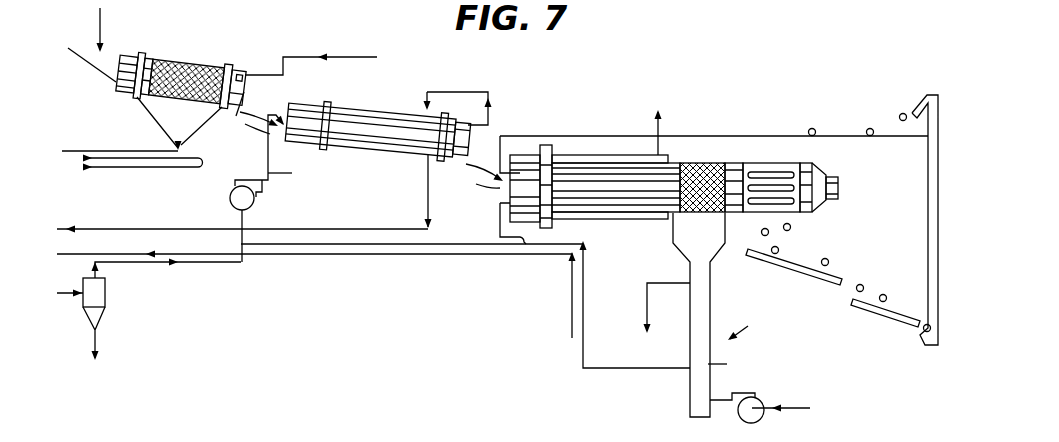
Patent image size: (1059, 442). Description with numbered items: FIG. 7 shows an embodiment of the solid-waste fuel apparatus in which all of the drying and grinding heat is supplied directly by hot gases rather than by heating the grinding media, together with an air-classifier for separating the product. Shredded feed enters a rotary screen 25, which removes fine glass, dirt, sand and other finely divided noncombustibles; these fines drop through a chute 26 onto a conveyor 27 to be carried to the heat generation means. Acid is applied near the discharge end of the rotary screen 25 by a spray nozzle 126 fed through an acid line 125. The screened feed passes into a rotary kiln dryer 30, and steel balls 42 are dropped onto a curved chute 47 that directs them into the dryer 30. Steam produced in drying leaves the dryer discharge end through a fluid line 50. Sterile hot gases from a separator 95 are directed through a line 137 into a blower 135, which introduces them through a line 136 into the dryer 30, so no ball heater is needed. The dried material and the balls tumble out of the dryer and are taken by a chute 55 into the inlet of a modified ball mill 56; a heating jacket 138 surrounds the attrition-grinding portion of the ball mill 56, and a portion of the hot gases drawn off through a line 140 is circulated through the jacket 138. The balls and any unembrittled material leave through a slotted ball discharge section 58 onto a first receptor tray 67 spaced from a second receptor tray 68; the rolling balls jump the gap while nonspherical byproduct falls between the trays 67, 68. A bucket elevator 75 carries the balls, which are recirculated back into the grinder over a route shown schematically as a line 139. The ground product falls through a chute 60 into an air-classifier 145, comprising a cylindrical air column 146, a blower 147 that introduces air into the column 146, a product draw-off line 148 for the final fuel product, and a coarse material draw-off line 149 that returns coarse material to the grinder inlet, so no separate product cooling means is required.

The rotary screen 25 is at (190, 62).
The spray nozzle 126 is at (240, 66).
The acid line 125 is at (350, 40).
The chute 26 is at (150, 117).
The conveyor 27 is at (120, 172).
The curved chute 47 is at (256, 130).
The rotary kiln dryer 30 is at (388, 106).
The fluid line 50 is at (478, 93).
The line 136 is at (297, 175).
The blower 135 is at (254, 196).
The line 137 is at (211, 262).
The line 140 is at (386, 248).
The separator 95 is at (103, 297).
The chute 55 is at (484, 180).
The heating jacket 138 is at (587, 160).
The modified ball mill 56 is at (615, 170).
The line 139 is at (735, 122).
The ball discharge section 58 is at (787, 156).
The steel balls 42 is at (791, 230).
The bucket elevator 75 is at (930, 241).
The chute 60 is at (672, 240).
The product draw-off line 148 is at (647, 307).
The coarse material draw-off line 149 is at (628, 370).
The air-classifier 145 is at (747, 324).
The air column 146 is at (735, 365).
The first receptor tray 67 is at (793, 268).
The second receptor tray 68 is at (878, 318).
The blower 147 is at (752, 422).